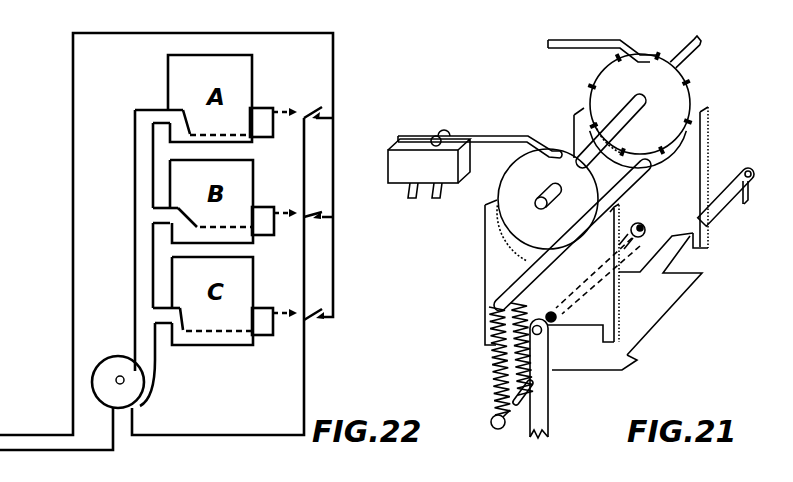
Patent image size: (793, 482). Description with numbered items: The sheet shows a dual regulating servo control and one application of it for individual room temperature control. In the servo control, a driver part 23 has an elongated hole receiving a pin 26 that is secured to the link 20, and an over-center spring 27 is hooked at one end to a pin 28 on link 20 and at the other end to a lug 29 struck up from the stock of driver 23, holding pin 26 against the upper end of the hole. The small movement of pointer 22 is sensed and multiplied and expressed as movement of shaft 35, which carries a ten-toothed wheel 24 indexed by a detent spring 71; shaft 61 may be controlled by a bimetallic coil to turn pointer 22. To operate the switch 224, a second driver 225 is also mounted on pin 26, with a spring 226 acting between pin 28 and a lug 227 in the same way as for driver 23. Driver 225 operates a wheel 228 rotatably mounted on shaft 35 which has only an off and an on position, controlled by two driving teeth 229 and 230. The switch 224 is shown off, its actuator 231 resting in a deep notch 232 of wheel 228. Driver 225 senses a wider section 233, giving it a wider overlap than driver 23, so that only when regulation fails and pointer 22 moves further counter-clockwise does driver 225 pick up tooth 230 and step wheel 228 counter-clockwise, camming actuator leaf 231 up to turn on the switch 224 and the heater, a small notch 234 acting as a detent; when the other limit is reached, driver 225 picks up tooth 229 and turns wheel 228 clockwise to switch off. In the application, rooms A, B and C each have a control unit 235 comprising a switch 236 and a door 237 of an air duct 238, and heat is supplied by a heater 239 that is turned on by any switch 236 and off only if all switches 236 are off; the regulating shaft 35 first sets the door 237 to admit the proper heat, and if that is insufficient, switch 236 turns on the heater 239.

In FIG. 21, the link 20 is at (549, 417).
In FIG. 21, the pointer 22 is at (670, 312).
In FIG. 21, the driver part 23 is at (706, 142).
In FIG. 21, the wheel 24 is at (691, 88).
In FIG. 21, the pin 26 is at (637, 223).
In FIG. 21, the over-center spring 27 is at (494, 390).
In FIG. 21, the pin 28 is at (508, 425).
In FIG. 21, the lug 29 is at (628, 191).
In FIG. 21, the shaft 35 is at (690, 60).
In FIG. 21, the shaft 61 is at (734, 214).
In FIG. 21, the detent spring 71 is at (598, 42).
In FIG. 21, the switch 224 is at (447, 196).
In FIG. 21, the driver 225 is at (485, 281).
In FIG. 21, the spring 226 is at (527, 370).
In FIG. 21, the lug 227 is at (560, 275).
In FIG. 21, the wheel 228 is at (537, 230).
In FIG. 21, the driving tooth 229 is at (500, 208).
In FIG. 21, the driving tooth 230 is at (582, 224).
In FIG. 21, the actuator 231 is at (488, 135).
In FIG. 21, the deep notch 232 is at (555, 154).
In FIG. 21, the wider section 233 is at (631, 367).
In FIG. 21, the small notch 234 is at (588, 165).
In FIG. 22, the control unit 235 is at (262, 108).
In FIG. 22, the switch 236 is at (322, 107).
In FIG. 22, the door 237 is at (193, 125).
In FIG. 22, the air duct 238 is at (160, 116).
In FIG. 22, the heater 239 is at (146, 389).